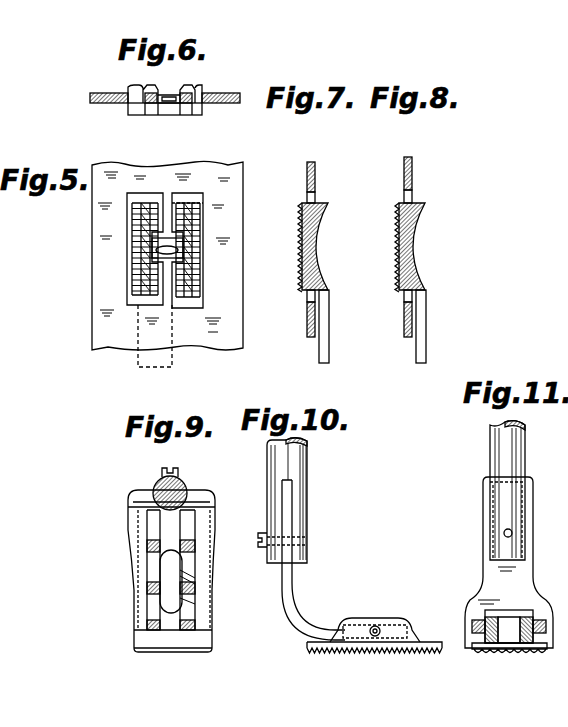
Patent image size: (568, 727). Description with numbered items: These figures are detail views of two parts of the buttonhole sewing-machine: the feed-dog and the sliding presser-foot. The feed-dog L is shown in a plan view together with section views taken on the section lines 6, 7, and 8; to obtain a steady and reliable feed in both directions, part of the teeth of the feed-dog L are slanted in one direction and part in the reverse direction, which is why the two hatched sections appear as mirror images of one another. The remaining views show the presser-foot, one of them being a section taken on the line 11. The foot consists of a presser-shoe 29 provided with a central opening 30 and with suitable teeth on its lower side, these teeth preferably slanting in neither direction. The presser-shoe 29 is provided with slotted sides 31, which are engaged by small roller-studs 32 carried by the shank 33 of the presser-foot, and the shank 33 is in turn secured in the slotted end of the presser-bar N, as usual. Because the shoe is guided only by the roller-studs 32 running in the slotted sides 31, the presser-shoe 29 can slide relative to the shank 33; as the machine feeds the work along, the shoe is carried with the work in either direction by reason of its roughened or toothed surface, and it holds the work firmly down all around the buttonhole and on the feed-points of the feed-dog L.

In FIG. 6, the feed-dog L is at (194, 96).
In FIG. 5, the feed-dog L is at (142, 260).
In FIG. 7, the feed-dog L is at (318, 257).
In FIG. 8, the feed-dog L is at (402, 250).
In FIG. 9, the presser-bar N is at (186, 487).
In FIG. 10, the presser-bar N is at (308, 501).
In FIG. 11, the presser-bar N is at (512, 470).
In FIG. 5, the section line 6- 6 is at (92, 252).
In FIG. 6, the section line 7- 7 is at (190, 160).
In FIG. 5, the section line 7- 7 is at (190, 160).
In FIG. 6, the section line 8- 8 is at (199, 160).
In FIG. 5, the section line 8- 8 is at (199, 160).
In FIG. 10, the section line 11- 11 is at (375, 695).
In FIG. 9, the presser-shoe 29 is at (163, 642).
In FIG. 10, the presser-shoe 29 is at (405, 650).
In FIG. 11, the presser-shoe 29 is at (535, 652).
In FIG. 9, the central opening 30 is at (172, 581).
In FIG. 11, the central opening 30 is at (507, 652).
In FIG. 9, the slotted sides 31 is at (197, 597).
In FIG. 10, the slotted sides 31 is at (392, 628).
In FIG. 9, the roller-studs 32 is at (197, 578).
In FIG. 10, the roller-studs 32 is at (378, 626).
In FIG. 11, the roller-studs 32 is at (509, 626).
In FIG. 9, the shank 33 is at (137, 522).
In FIG. 10, the shank 33 is at (293, 594).
In FIG. 11, the shank 33 is at (509, 562).